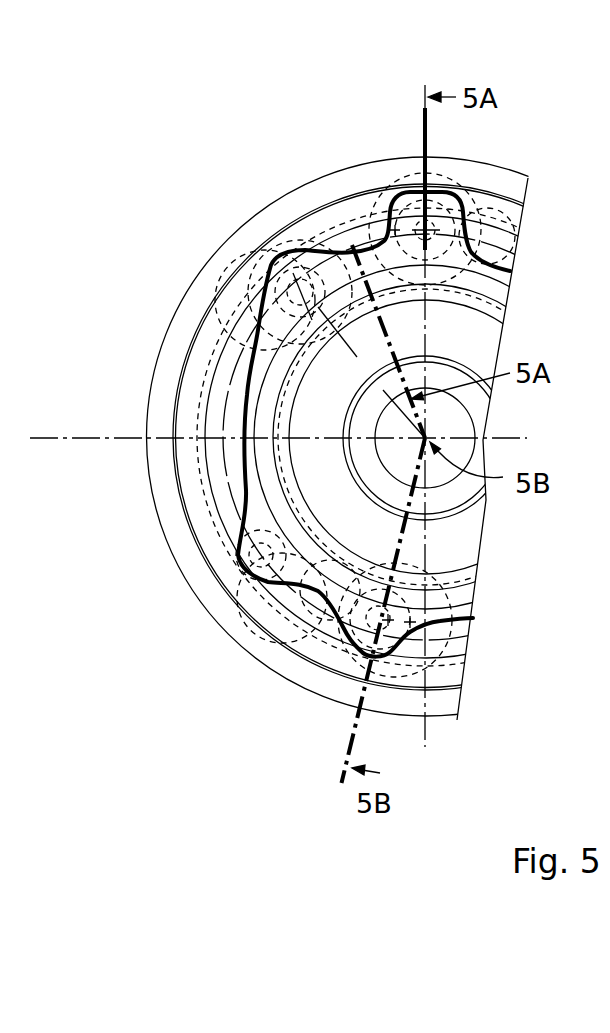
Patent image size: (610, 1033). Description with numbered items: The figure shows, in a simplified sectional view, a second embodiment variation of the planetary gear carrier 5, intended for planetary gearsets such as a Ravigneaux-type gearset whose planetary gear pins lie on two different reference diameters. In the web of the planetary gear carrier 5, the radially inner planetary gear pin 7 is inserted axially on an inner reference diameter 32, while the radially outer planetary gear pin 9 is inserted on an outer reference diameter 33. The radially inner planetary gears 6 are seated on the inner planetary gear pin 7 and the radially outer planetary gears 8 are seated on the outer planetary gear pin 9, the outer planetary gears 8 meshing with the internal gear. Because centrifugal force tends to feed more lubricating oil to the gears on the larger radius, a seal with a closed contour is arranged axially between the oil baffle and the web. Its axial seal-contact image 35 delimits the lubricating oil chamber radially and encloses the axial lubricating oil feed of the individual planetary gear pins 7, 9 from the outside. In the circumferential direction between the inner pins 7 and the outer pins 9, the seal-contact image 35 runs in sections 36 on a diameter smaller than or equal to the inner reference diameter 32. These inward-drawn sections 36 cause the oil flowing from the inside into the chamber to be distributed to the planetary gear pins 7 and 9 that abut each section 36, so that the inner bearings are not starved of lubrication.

The planetary gear carrier 5 is at (343, 180).
The radially inner planetary gears 6 is at (400, 677).
The radially inner planetary gear pin 7 is at (388, 622).
The radially outer planetary gears 8 is at (262, 605).
The radially outer planetary gear pin 9 is at (277, 570).
The inner reference diameter 32 is at (320, 280).
The outer reference diameter 33 is at (472, 228).
The seal-contact image 35 is at (250, 300).
The sections of the seal-contact image 36 is at (341, 250).